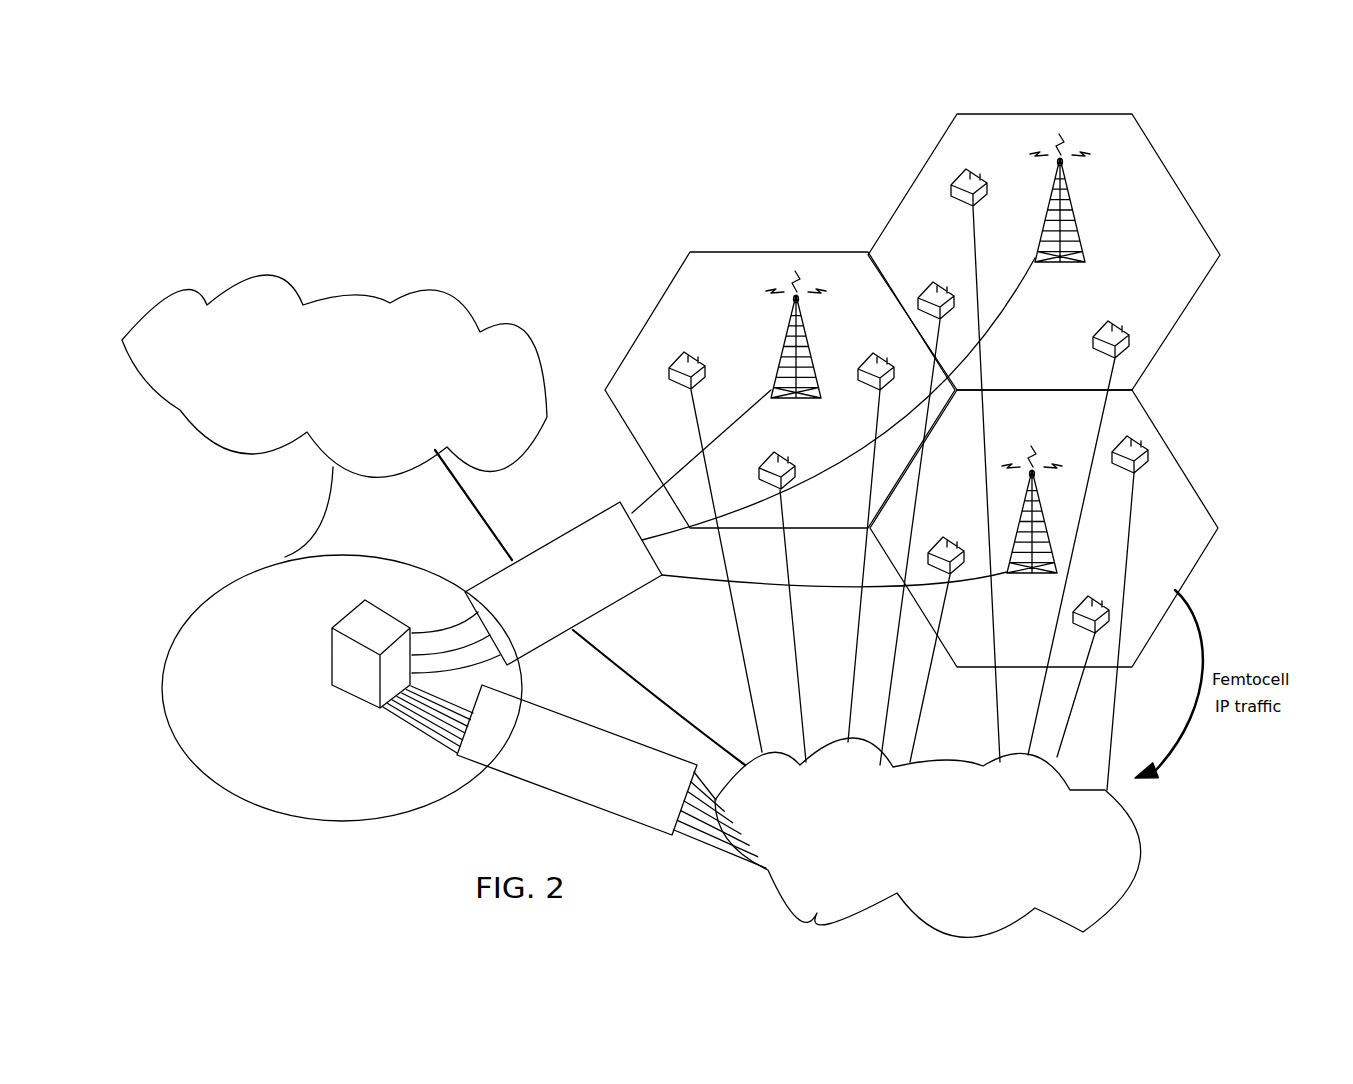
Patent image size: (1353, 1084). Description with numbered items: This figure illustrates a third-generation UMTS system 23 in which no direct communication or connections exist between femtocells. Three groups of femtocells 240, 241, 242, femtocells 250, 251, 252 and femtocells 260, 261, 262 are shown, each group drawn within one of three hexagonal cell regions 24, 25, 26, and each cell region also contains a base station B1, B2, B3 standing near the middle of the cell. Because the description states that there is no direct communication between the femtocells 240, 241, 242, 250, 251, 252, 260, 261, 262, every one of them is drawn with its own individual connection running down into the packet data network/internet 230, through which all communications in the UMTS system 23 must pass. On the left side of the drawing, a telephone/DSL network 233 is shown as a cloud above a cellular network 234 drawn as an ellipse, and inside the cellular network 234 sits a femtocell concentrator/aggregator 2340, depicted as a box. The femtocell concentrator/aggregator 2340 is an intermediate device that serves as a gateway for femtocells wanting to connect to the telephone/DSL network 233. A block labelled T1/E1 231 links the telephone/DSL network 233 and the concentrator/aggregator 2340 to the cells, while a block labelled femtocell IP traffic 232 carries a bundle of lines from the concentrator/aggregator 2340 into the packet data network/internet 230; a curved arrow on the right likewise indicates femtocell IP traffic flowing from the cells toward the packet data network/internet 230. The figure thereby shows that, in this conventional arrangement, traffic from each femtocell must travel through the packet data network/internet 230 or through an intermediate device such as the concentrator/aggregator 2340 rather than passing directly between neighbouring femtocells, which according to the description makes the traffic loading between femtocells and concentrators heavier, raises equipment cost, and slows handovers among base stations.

The 3G UMTS system 23 is at (670, 150).
The macro cell 24 is at (1188, 201).
The macro cell 25 is at (1178, 461).
The macro cell 26 is at (776, 252).
The packet data network/internet 230 is at (1137, 850).
The T1/E1 backhaul link 231 is at (538, 546).
The femtocell IP traffic link 232 is at (578, 724).
The telephone/DSL network 233 is at (455, 294).
The cellular network 234 is at (228, 583).
The femtocell concentrator/aggregator 2340 is at (340, 618).
The femtocell 240 is at (1095, 330).
The femtocell 241 is at (980, 198).
The femtocell 242 is at (923, 283).
The femtocell 250 is at (1138, 470).
The femtocell 251 is at (1087, 595).
The femtocell 252 is at (943, 540).
The femtocell 260 is at (875, 352).
The femtocell 261 is at (795, 465).
The femtocell 262 is at (669, 370).
The macro base station B1 is at (1079, 210).
The macro base station B2 is at (1040, 506).
The macro base station B3 is at (787, 320).